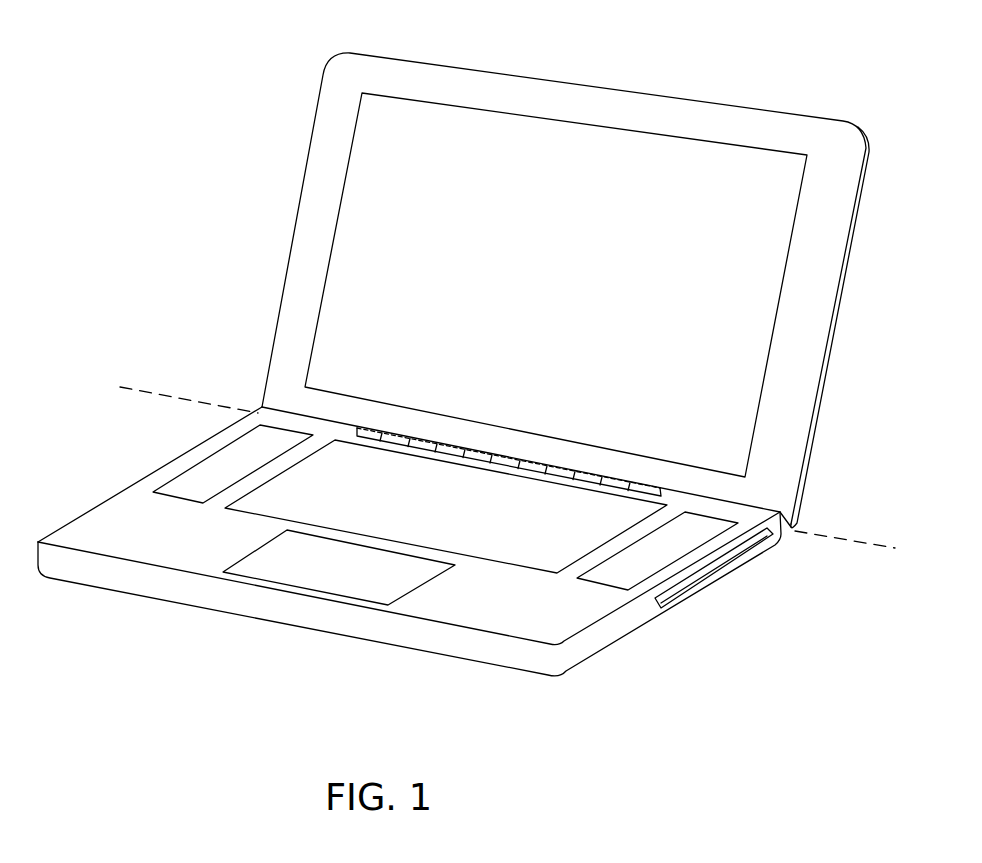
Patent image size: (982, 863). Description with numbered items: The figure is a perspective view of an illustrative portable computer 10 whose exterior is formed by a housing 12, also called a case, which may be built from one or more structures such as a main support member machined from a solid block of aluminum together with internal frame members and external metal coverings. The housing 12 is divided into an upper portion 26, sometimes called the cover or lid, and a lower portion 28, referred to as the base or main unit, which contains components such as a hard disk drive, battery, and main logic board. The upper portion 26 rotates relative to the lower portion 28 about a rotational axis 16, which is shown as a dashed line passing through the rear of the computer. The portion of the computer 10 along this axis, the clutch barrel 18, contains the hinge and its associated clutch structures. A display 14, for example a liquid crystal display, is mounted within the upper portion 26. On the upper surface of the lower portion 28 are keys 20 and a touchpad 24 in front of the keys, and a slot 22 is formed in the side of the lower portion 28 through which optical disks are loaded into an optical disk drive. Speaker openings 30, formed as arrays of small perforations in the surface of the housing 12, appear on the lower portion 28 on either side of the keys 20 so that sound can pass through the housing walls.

The portable computer 10 is at (777, 43).
The housing 12 is at (275, 117).
The display 14 is at (572, 138).
The rotational axis 16 is at (160, 391).
The clutch barrel 18 is at (440, 438).
The keys 20 is at (522, 558).
The slot 22 is at (727, 560).
The touchpad 24 is at (255, 568).
The upper portion 26 is at (786, 437).
The lower portion 28 is at (521, 660).
The speaker openings 30 is at (178, 489).